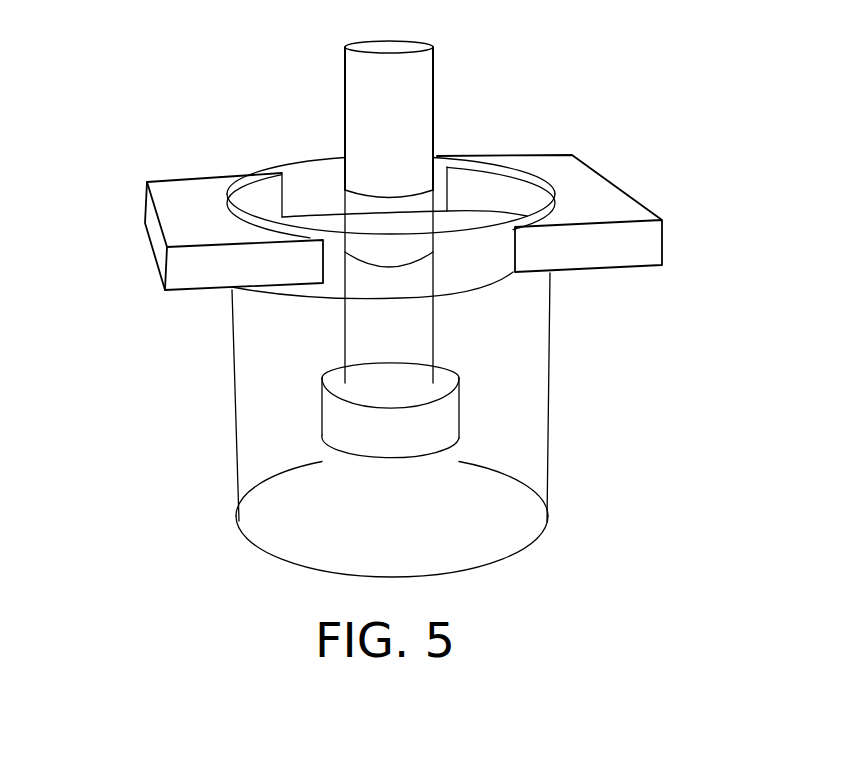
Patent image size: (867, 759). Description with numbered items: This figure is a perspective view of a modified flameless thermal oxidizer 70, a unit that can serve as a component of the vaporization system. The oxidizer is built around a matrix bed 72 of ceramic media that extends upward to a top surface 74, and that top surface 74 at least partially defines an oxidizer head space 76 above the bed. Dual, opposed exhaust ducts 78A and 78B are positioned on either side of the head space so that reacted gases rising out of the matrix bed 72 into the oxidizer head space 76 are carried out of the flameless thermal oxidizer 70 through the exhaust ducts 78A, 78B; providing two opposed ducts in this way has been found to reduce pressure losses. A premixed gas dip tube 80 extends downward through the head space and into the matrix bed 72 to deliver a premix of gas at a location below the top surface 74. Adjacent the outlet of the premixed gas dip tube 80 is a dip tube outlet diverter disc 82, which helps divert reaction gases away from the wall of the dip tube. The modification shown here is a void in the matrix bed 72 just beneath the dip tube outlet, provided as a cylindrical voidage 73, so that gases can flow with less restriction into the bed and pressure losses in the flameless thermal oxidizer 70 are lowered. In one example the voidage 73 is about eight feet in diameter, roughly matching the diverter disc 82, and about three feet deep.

The flameless thermal oxidizer 70 is at (156, 352).
The matrix bed 72 is at (500, 507).
The cylindrical voidage 73 is at (322, 420).
The top surface 74 is at (480, 293).
The oxidizer head space 76 is at (308, 167).
The exhaust duct 78A is at (184, 200).
The exhaust duct 78B is at (587, 192).
The premixed gas dip tube 80 is at (437, 103).
The dip tube outlet diverter disc 82 is at (460, 390).